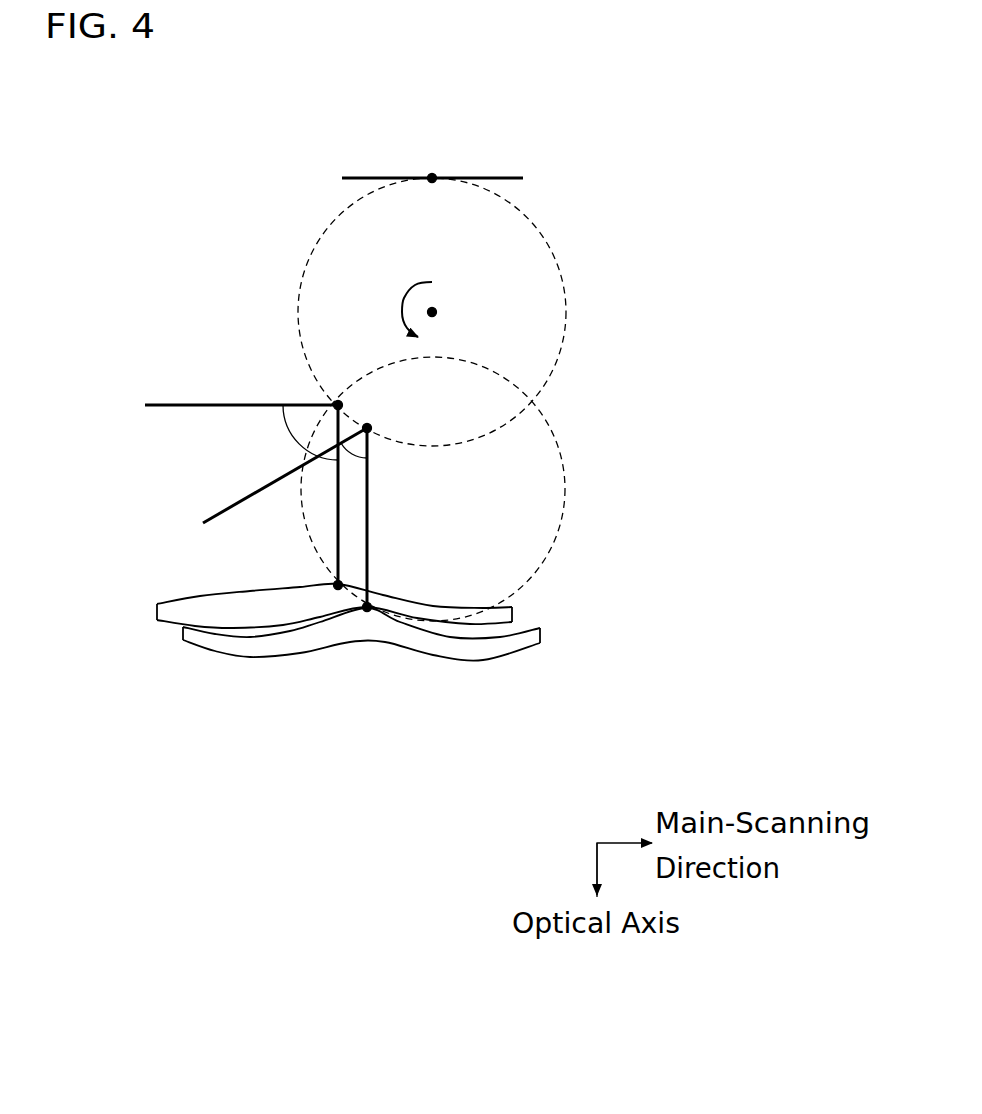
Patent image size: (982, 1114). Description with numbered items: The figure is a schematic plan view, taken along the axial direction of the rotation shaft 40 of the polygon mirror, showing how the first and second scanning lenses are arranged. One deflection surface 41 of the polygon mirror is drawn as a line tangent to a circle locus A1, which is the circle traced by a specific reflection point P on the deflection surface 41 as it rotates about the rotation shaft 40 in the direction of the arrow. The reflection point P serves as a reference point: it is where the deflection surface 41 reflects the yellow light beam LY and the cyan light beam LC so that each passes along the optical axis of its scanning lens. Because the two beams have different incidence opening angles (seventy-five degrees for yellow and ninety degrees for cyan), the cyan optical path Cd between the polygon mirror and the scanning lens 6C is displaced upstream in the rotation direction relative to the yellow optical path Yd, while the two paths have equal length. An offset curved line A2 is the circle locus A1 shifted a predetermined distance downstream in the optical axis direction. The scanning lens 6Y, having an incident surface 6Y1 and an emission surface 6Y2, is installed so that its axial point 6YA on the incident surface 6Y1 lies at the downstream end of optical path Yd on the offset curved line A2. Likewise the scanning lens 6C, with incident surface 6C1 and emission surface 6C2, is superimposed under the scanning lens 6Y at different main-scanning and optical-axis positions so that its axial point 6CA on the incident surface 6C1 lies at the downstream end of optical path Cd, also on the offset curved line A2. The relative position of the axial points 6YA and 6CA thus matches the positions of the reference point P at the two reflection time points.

The deflection surface 41 is at (510, 177).
The rotation shaft 40 is at (432, 307).
The circle locus A1 is at (567, 313).
The offset curved line A2 is at (566, 503).
The reflection point P is at (432, 177).
The cyan light beam LC is at (215, 404).
The yellow light beam LY is at (243, 499).
The optical path Cd is at (340, 522).
The optical path Yd is at (369, 560).
The scanning lens 6C is at (286, 622).
The incident surface 6C1 is at (223, 602).
The emission surface 6C2 is at (160, 622).
The scanning lens 6Y is at (342, 632).
The incident surface 6Y1 is at (318, 620).
The emission surface 6Y2 is at (287, 658).
The axial point 6CA is at (338, 592).
The axial point 6YA is at (367, 612).